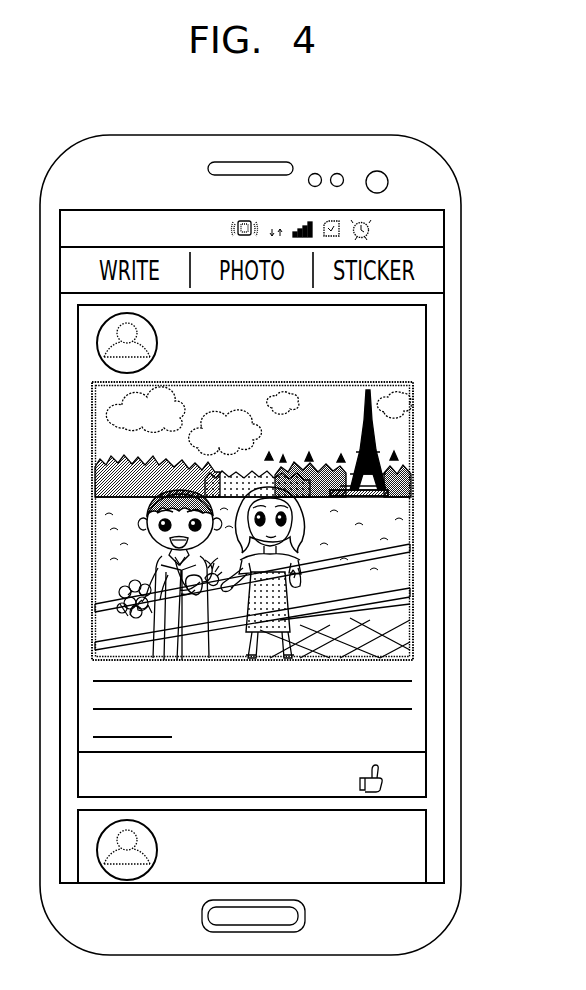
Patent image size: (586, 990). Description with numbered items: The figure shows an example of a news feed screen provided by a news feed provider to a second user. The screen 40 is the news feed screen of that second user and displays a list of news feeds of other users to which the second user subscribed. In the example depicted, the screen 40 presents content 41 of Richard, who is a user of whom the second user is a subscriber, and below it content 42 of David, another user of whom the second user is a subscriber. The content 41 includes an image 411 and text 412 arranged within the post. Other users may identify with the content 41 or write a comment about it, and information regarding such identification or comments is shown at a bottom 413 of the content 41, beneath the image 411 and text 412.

The screen 40 is at (444, 230).
The content 41 is at (307, 551).
The image 411 is at (252, 521).
The text 412 is at (412, 697).
The bottom of the content 413 is at (412, 776).
The content 42 is at (426, 848).